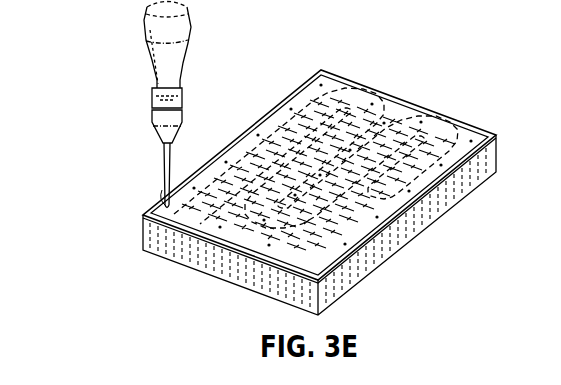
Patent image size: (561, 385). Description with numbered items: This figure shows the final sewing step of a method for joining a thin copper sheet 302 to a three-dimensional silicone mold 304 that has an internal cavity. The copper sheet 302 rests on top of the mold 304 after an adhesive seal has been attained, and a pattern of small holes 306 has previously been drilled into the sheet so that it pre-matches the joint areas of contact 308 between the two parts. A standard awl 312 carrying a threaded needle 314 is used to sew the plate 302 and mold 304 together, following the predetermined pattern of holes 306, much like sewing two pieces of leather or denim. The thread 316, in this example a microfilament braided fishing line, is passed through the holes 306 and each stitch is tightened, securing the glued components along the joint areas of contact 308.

The copper sheet 302 is at (430, 172).
The silicone mold 304 is at (259, 289).
The holes 306 is at (295, 108).
The joint areas of contact 308 is at (243, 251).
The awl 312 is at (148, 57).
The threaded needle 314 is at (165, 147).
The thread 316 is at (163, 186).